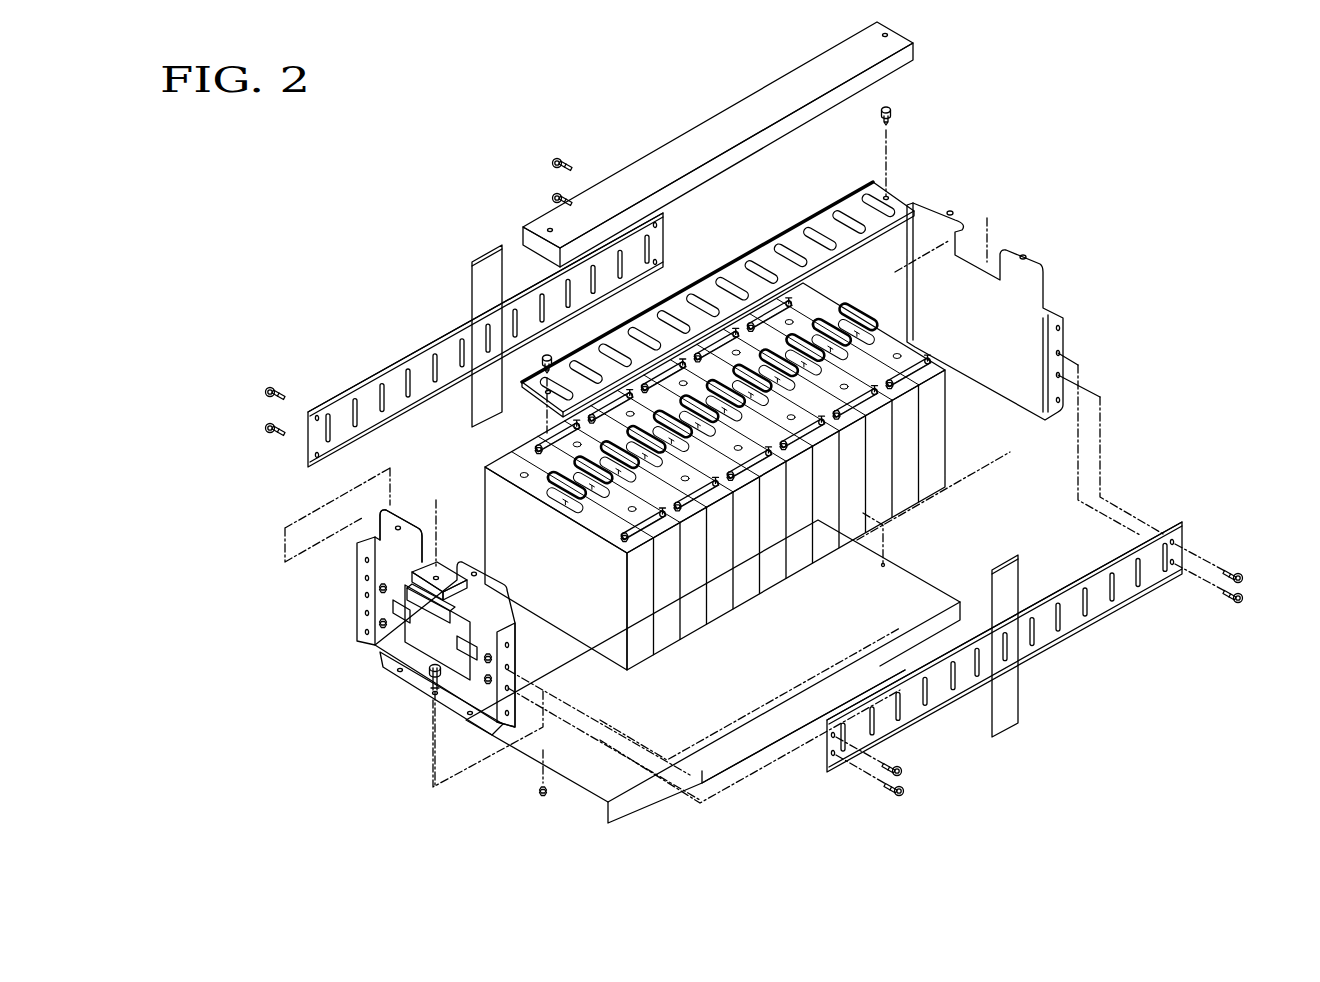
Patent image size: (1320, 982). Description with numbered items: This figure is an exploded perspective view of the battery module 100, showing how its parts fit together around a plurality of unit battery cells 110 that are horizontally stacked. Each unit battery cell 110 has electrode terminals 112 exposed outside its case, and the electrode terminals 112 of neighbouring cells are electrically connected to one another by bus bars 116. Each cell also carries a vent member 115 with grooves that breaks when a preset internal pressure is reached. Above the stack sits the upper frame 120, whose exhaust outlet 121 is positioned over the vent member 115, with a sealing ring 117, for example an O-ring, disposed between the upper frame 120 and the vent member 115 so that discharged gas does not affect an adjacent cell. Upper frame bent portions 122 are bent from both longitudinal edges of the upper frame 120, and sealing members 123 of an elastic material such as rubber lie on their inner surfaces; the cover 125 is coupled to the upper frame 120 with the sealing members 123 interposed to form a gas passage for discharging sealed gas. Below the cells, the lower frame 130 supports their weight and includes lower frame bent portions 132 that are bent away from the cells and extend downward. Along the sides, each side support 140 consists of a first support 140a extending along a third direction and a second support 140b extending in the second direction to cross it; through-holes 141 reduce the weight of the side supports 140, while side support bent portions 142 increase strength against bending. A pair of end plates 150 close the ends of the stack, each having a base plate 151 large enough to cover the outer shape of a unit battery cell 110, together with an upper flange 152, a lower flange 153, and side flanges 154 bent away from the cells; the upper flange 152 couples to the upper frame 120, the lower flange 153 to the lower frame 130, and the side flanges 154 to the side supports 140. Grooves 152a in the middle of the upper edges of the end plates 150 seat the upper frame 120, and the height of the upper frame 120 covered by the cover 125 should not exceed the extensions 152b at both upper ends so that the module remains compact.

The battery module 100 is at (1213, 175).
The unit battery cell 110 is at (762, 482).
The electrode terminal 112 is at (540, 441).
The vent member 115 is at (567, 508).
The bus bar 116 is at (900, 378).
The sealing ring 117 is at (557, 485).
The upper frame 120 is at (718, 289).
The exhaust outlet 121 is at (795, 236).
The upper frame bent portion 122 is at (903, 203).
The sealing member 123 is at (830, 200).
The cover 125 is at (655, 163).
The lower frame 130 is at (696, 672).
The lower frame bent portion 132 is at (648, 793).
The side support 140 is at (754, 504).
The first support 140a is at (965, 683).
The second support 140b is at (1005, 722).
The through-hole 141 is at (383, 385).
The side support bent portion 142 is at (428, 335).
The end plate 150 is at (1053, 288).
The base plate 151 is at (410, 657).
The upper flange 152 is at (355, 520).
The groove 152a is at (447, 558).
The extension 152b is at (385, 527).
The lower flange 153 is at (410, 683).
The side flange 154 is at (362, 622).